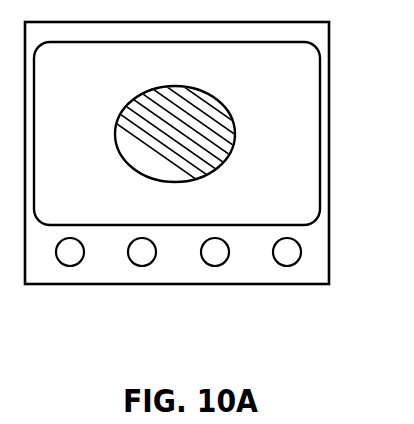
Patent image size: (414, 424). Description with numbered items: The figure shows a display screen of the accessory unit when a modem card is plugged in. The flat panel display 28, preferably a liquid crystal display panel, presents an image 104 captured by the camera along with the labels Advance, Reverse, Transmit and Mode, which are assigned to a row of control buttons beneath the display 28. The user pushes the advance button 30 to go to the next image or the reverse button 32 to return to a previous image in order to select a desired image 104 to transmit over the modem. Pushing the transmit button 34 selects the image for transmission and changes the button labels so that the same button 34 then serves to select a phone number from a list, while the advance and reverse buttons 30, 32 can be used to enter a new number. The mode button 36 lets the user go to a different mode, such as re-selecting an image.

The flat panel display 28 is at (319, 153).
The image 104 is at (236, 132).
The advance button 30 is at (70, 266).
The reverse button 32 is at (139, 266).
The transmit button 34 is at (216, 266).
The mode button 36 is at (301, 250).